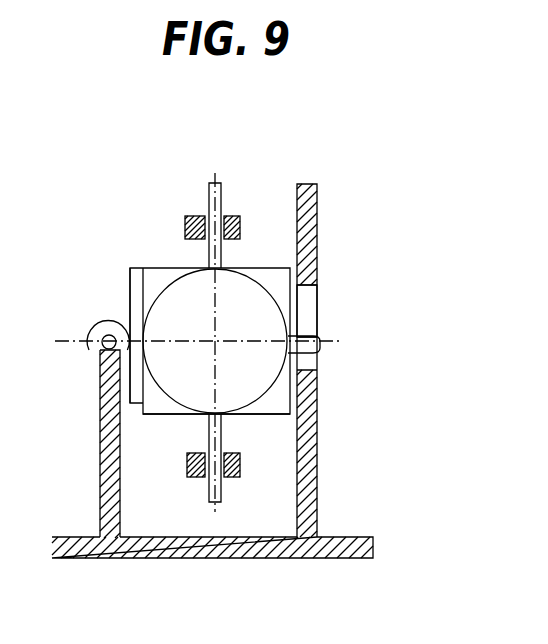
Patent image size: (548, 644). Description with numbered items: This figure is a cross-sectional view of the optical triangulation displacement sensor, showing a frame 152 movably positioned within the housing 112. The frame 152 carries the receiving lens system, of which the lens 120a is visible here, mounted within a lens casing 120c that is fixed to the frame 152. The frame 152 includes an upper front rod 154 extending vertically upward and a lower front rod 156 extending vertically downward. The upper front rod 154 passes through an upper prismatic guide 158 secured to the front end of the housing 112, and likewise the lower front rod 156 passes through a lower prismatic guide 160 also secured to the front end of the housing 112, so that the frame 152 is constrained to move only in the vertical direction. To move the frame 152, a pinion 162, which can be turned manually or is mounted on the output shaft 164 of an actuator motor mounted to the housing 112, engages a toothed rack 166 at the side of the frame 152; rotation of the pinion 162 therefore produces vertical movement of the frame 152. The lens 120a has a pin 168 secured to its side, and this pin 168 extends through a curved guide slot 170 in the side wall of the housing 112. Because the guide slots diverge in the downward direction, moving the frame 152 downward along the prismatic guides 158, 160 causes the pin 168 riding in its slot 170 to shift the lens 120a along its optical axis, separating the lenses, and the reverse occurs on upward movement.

The housing 112 is at (317, 206).
The lens 120a is at (268, 372).
The lens casing 120c is at (136, 414).
The frame 152 is at (203, 202).
The upper front rod 154 is at (219, 202).
The lower front rod 156 is at (222, 482).
The upper prismatic guide 158 is at (185, 228).
The lower prismatic guide 160 is at (187, 477).
The pinion 162 is at (100, 321).
The output shaft 164 is at (102, 342).
The rack 166 is at (128, 387).
The pin 168 is at (310, 353).
The guide slot 170 is at (305, 297).